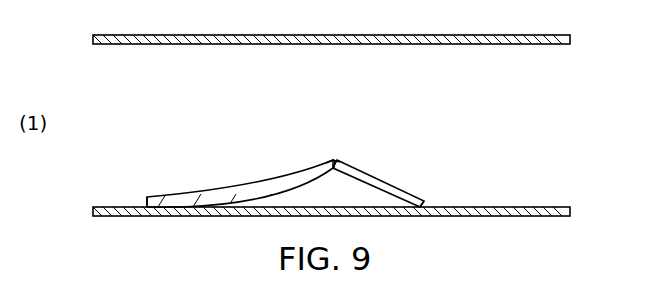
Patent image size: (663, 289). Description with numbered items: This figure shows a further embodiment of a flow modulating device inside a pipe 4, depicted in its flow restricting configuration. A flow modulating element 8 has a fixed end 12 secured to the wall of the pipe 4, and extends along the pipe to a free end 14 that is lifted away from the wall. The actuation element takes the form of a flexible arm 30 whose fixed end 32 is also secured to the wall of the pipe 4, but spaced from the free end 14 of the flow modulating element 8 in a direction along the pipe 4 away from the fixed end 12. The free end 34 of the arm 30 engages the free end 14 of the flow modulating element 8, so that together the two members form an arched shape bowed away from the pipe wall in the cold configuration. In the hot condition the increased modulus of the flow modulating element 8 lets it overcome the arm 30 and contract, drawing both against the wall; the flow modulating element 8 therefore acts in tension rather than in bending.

The pipe 4 is at (480, 45).
The flow modulating element 8 is at (250, 186).
The fixed end of the flow modulating element 12 is at (147, 198).
The free end of the flow modulating element 14 is at (332, 161).
The flexible arm 30 is at (393, 187).
The fixed end of the arm 32 is at (426, 201).
The free end of the arm 34 is at (338, 165).